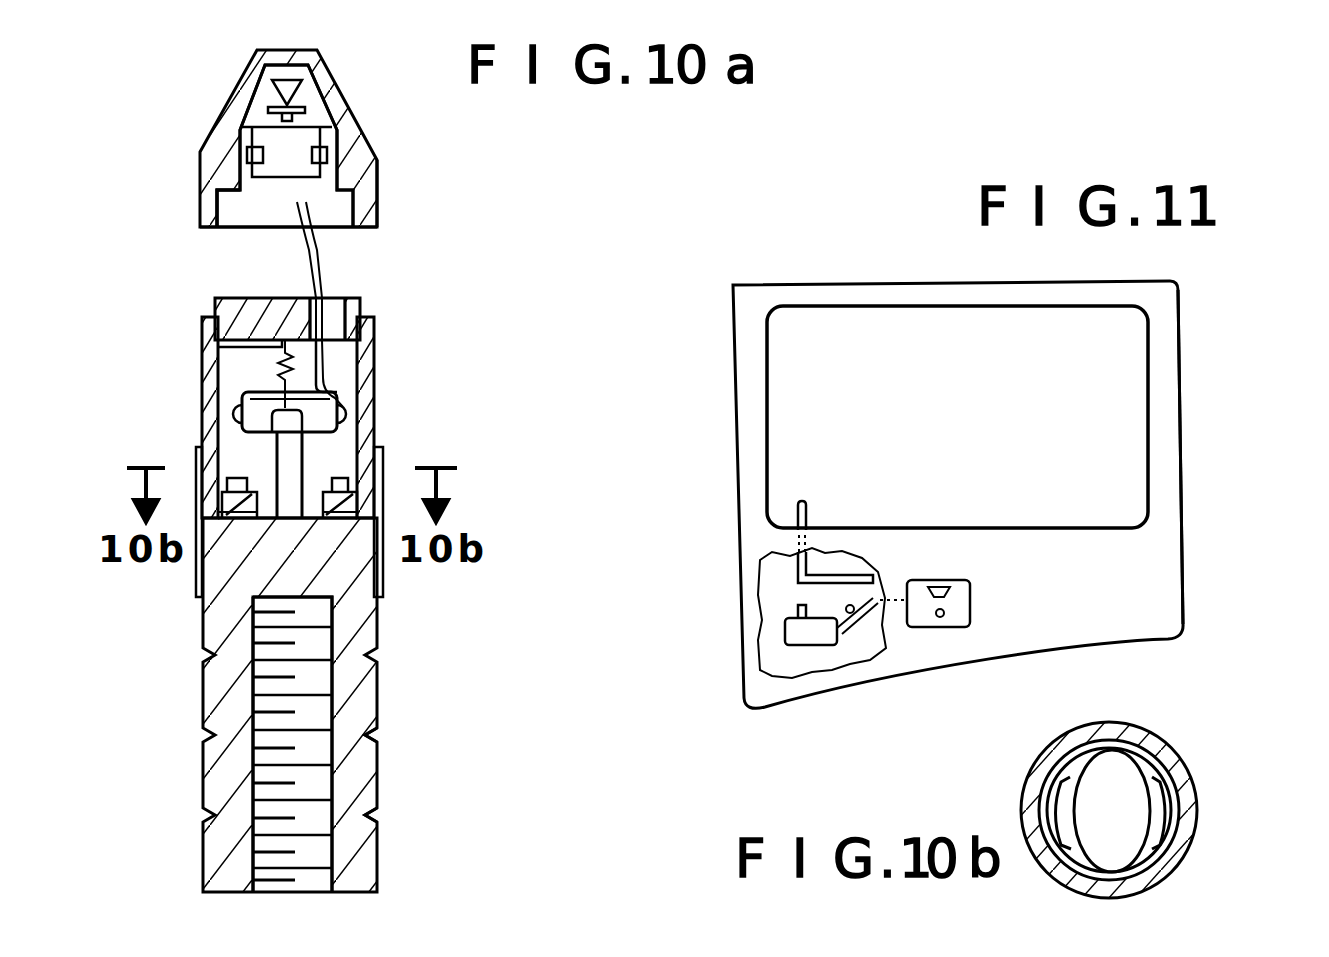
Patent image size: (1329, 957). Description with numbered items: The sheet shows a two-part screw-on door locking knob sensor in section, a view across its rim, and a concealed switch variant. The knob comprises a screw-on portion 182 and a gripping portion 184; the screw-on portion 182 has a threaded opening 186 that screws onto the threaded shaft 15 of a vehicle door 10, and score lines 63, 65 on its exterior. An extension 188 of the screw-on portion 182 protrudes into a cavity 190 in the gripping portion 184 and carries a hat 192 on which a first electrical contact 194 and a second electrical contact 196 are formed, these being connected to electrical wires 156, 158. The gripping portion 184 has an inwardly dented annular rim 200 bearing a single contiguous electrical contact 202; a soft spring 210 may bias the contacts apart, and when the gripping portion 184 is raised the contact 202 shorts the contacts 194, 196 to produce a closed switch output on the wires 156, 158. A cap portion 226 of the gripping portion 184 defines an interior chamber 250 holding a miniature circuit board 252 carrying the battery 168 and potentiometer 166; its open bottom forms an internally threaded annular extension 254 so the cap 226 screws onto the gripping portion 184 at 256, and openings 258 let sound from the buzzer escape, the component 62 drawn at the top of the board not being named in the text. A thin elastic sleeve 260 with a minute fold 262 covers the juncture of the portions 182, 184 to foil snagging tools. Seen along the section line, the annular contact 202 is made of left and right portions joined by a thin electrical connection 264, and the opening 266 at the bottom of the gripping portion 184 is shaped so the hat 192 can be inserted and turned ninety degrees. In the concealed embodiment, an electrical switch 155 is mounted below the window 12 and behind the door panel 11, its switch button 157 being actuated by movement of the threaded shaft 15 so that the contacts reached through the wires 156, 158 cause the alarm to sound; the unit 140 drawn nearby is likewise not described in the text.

In FIG. 11, the vehicle door 10 is at (1191, 458).
In FIG. 11, the door panel 11 is at (1130, 573).
In FIG. 11, the window 12 is at (1108, 395).
In FIG. 11, the threaded shaft 15 is at (800, 505).
In FIG. 11, the receiver unit 140 is at (940, 580).
In FIG. 11, the electrical switch 155 is at (787, 632).
In FIG. 10a, the electrical wire 156 is at (326, 258).
In FIG. 11, the electrical wire 156 is at (853, 617).
In FIG. 11, the switch button 157 is at (800, 605).
In FIG. 10a, the electrical wire 158 is at (320, 235).
In FIG. 11, the electrical wire 158 is at (848, 614).
In FIG. 10a, the light emitting diode 62 is at (282, 74).
In FIG. 10a, the score line 63 is at (378, 822).
In FIG. 10a, the score line 65 is at (378, 738).
In FIG. 10a, the potentiometer 166 is at (322, 154).
In FIG. 10a, the battery 168 is at (248, 155).
In FIG. 10a, the screw-on portion 182 is at (222, 777).
In FIG. 10a, the gripping portion 184 is at (205, 367).
In FIG. 10a, the threaded opening 186 is at (322, 877).
In FIG. 10a, the extension 188 is at (292, 447).
In FIG. 10a, the cavity 190 is at (235, 380).
In FIG. 10a, the hat 192 is at (326, 396).
In FIG. 10a, the first electrical contact 194 is at (236, 412).
In FIG. 10a, the second electrical contact 196 is at (330, 410).
In FIG. 10a, the inwardly dented annular rim 200 is at (207, 574).
In FIG. 10a, the electrical contact 202 is at (340, 500).
In FIG. 10b, the electrical contact 202 is at (1165, 823).
In FIG. 10a, the soft spring 210 is at (280, 358).
In FIG. 10a, the cap portion 226 is at (272, 49).
In FIG. 10a, the interior chamber 250 is at (377, 167).
In FIG. 10a, the miniature circuit board 252 is at (233, 167).
In FIG. 10a, the annular extension 254 is at (377, 212).
In FIG. 10a, the threaded connection 256 is at (335, 300).
In FIG. 10a, the openings 258 is at (218, 122).
In FIG. 10a, the elastic sleeve 260 is at (383, 583).
In FIG. 10a, the minute fold 262 is at (368, 506).
In FIG. 10b, the thin electrical connection 264 is at (1147, 760).
In FIG. 10b, the opening 266 is at (1100, 780).